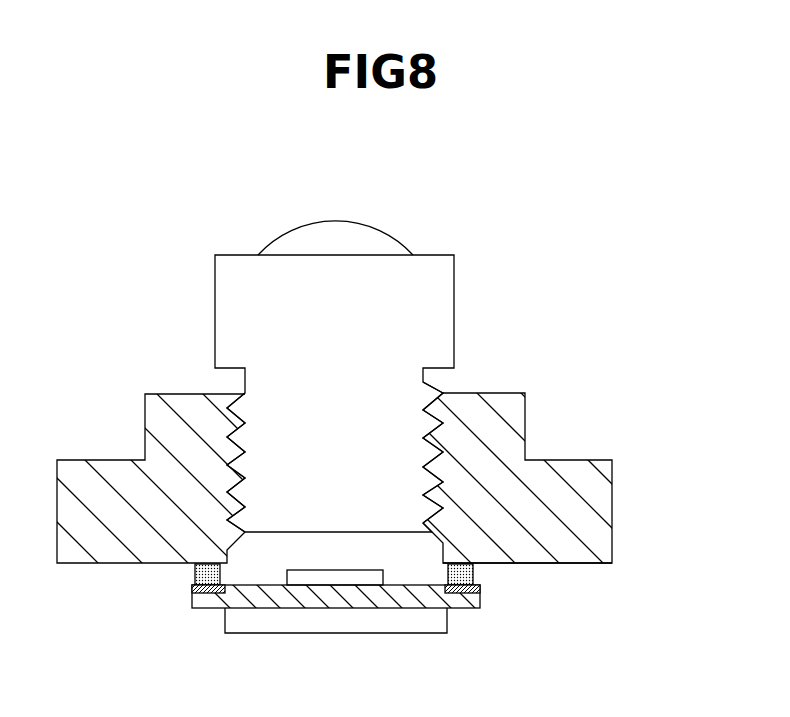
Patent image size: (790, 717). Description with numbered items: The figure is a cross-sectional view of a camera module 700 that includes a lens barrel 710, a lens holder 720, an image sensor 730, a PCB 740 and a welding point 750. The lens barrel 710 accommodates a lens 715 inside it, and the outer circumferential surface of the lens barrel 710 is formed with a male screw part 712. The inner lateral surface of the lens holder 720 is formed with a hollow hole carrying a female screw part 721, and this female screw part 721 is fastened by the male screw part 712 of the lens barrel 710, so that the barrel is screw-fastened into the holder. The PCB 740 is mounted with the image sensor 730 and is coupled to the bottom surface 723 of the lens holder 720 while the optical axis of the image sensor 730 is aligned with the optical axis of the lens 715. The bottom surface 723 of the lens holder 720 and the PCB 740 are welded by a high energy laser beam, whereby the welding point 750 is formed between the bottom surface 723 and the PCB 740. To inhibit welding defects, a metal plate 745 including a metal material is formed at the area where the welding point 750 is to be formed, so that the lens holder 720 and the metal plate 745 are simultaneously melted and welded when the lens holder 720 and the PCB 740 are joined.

The camera module 700 is at (552, 247).
The lens barrel 710 is at (238, 255).
The male screw part 712 is at (233, 397).
The lens 715 is at (348, 238).
The lens holder 720 is at (555, 428).
The female screw part 721 is at (435, 433).
The bottom surface 723 is at (593, 565).
The image sensor 730 is at (350, 578).
The PCB 740 is at (258, 600).
The metal plate 745 is at (193, 588).
The welding point 750 is at (473, 576).